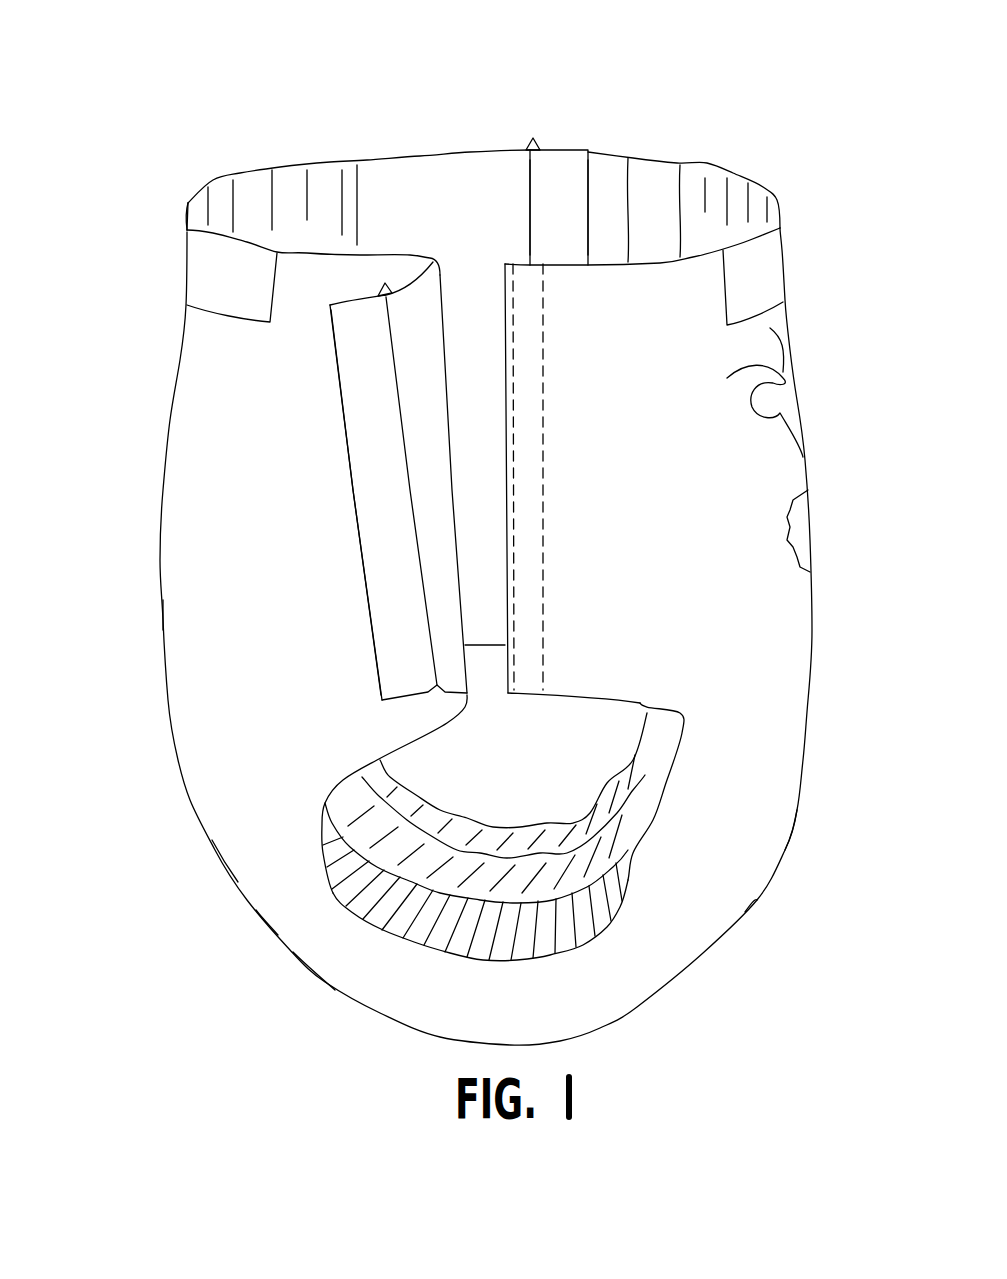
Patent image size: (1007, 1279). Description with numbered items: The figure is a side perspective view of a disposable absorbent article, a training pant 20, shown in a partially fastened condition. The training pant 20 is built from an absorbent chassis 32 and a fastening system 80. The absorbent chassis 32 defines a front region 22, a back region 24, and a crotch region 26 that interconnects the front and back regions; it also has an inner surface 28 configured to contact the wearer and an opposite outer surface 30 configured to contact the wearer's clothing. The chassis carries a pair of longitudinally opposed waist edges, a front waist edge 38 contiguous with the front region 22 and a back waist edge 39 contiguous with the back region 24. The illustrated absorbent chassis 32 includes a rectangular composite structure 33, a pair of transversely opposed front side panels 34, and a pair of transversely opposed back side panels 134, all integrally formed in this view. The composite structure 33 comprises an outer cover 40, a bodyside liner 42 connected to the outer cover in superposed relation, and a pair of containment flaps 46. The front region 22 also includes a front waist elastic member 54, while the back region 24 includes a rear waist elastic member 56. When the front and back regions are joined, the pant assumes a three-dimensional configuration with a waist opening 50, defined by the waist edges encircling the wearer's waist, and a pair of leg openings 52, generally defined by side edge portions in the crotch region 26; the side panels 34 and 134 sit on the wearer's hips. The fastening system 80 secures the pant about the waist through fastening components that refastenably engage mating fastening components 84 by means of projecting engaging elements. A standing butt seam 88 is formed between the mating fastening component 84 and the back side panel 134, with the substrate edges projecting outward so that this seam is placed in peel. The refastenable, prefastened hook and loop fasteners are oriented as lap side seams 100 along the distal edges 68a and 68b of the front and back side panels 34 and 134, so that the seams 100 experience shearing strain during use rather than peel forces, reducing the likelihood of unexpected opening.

The training pant 20 is at (198, 178).
The front region 22 is at (800, 610).
The back region 24 is at (187, 653).
The crotch region 26 is at (344, 970).
The inner surface 28 is at (413, 232).
The outer surface 30 is at (777, 832).
The absorbent chassis 32 is at (236, 853).
The rectangular composite structure 33 is at (277, 922).
The front side panels 34 is at (657, 257).
The front waist edge 38 is at (778, 193).
The back waist edge 39 is at (187, 212).
The outer cover 40 is at (737, 892).
The bodyside liner 42 is at (733, 183).
The containment flaps 46 is at (428, 948).
The waist opening 50 is at (440, 150).
The leg openings 52 is at (416, 762).
The front waist elastic member 54 is at (782, 266).
The rear waist elastic member 56 is at (187, 268).
The distal edge of front side panel 68a is at (497, 313).
The distal edge of back side panel 68b is at (530, 178).
The fastening system 80 is at (372, 650).
The mating fastening components 84 is at (562, 163).
The standing butt seam 88 is at (538, 128).
The lap side seams 100 is at (597, 128).
The back side panels 134 is at (363, 170).